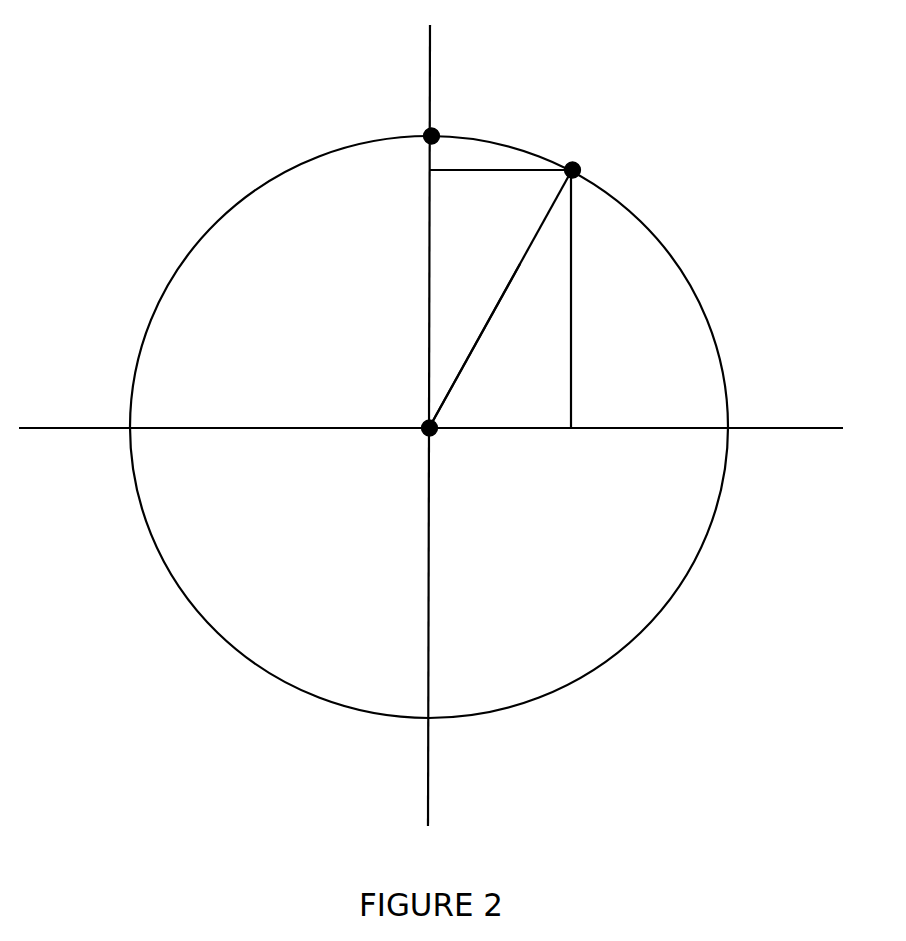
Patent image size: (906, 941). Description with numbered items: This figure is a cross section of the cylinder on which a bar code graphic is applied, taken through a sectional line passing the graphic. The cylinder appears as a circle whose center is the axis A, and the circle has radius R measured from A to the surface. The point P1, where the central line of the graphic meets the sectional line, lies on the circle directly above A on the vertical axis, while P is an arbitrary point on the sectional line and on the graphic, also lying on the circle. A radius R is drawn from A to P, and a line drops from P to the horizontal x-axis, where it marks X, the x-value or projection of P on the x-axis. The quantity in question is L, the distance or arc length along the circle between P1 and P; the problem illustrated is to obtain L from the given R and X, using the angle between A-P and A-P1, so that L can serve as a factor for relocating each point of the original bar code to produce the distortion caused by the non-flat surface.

The x-axis x is at (441, 428).
The arc length L is at (429, 412).
The radius R is at (500, 299).
The x-value of P X is at (570, 317).
The axis A is at (420, 442).
The intersection of C and S P1 is at (413, 123).
The arbitrary point P is at (585, 157).